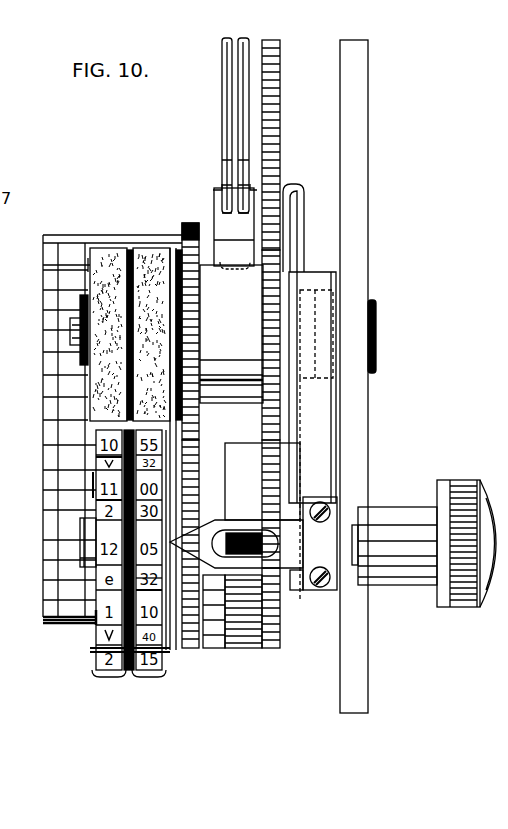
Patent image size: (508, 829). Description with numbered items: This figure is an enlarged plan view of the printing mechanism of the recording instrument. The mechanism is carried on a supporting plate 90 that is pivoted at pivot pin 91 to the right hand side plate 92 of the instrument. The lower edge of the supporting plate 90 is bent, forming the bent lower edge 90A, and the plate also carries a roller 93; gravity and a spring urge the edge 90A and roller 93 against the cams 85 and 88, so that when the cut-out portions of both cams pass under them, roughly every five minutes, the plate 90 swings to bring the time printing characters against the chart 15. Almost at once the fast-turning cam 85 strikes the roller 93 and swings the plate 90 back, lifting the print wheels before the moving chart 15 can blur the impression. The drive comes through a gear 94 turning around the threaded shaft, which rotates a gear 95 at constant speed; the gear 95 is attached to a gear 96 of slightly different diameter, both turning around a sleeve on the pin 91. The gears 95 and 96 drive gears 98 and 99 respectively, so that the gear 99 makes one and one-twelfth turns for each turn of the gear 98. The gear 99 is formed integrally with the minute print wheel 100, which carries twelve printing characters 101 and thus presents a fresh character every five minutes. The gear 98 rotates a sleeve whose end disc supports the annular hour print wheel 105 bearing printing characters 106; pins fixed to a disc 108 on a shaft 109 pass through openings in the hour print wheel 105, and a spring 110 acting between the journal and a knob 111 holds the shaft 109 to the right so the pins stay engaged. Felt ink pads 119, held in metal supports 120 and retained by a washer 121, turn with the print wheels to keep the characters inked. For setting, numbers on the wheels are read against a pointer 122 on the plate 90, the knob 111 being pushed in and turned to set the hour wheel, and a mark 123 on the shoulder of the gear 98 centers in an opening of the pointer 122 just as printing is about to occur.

The chart 15 is at (82, 620).
The cam 85 is at (229, 104).
The cam 88 is at (242, 70).
The supporting plate 90 is at (296, 220).
The bent lower edge 90A is at (214, 190).
The pivot pin 91 is at (72, 333).
The right hand side plate 92 is at (358, 221).
The roller 93 is at (226, 220).
The gear 94 is at (274, 97).
The gear 95 is at (270, 270).
The gear 96 is at (183, 232).
The gear 98 is at (280, 480).
The gear 99 is at (193, 470).
The minute print wheel 100 is at (137, 590).
The printing characters 101 is at (137, 578).
The hour print wheel 105 is at (98, 495).
The printing characters 106 is at (97, 457).
The disc 108 is at (93, 480).
The shaft 109 is at (84, 532).
The spring 110 is at (357, 528).
The knob 111 is at (470, 482).
The felt ink pads 119 is at (140, 260).
The metal supports 120 is at (90, 265).
The washer 121 is at (80, 305).
The pointer 122 is at (286, 565).
The mark 123 is at (240, 533).